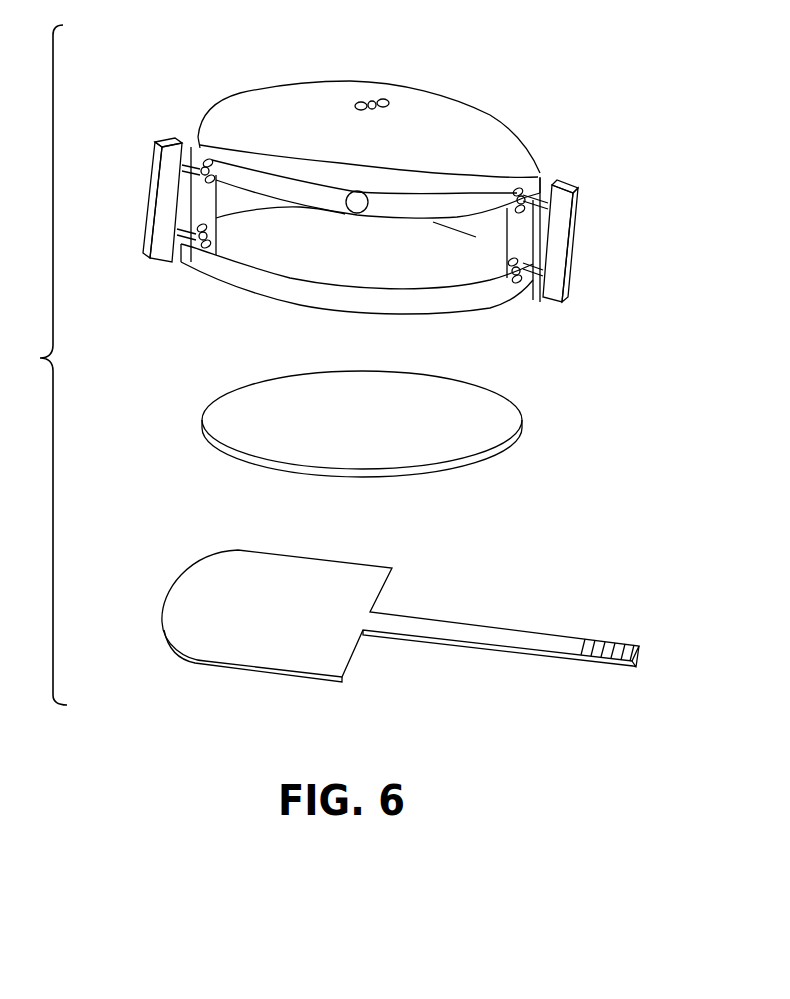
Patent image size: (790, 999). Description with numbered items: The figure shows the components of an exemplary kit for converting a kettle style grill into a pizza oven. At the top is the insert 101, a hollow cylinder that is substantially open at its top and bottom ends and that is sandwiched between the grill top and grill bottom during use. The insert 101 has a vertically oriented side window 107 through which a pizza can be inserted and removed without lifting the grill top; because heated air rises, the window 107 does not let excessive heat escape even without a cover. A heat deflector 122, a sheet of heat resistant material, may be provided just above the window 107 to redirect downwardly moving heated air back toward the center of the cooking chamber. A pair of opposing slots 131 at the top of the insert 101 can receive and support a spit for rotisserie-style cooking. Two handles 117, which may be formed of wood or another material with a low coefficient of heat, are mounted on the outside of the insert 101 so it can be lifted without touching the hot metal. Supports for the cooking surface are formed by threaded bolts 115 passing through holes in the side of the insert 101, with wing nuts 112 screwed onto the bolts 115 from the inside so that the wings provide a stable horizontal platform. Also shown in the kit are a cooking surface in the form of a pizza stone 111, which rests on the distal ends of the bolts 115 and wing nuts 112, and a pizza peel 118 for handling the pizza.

The insert 101 is at (558, 197).
The side window 107 is at (492, 239).
The pizza stone 111 is at (552, 428).
The wing nut 112 is at (373, 110).
The threaded bolt 115 is at (195, 170).
The handle 117 is at (160, 140).
The pizza peel 118 is at (368, 200).
The heat deflector 122 is at (289, 158).
The slot 131 is at (198, 137).